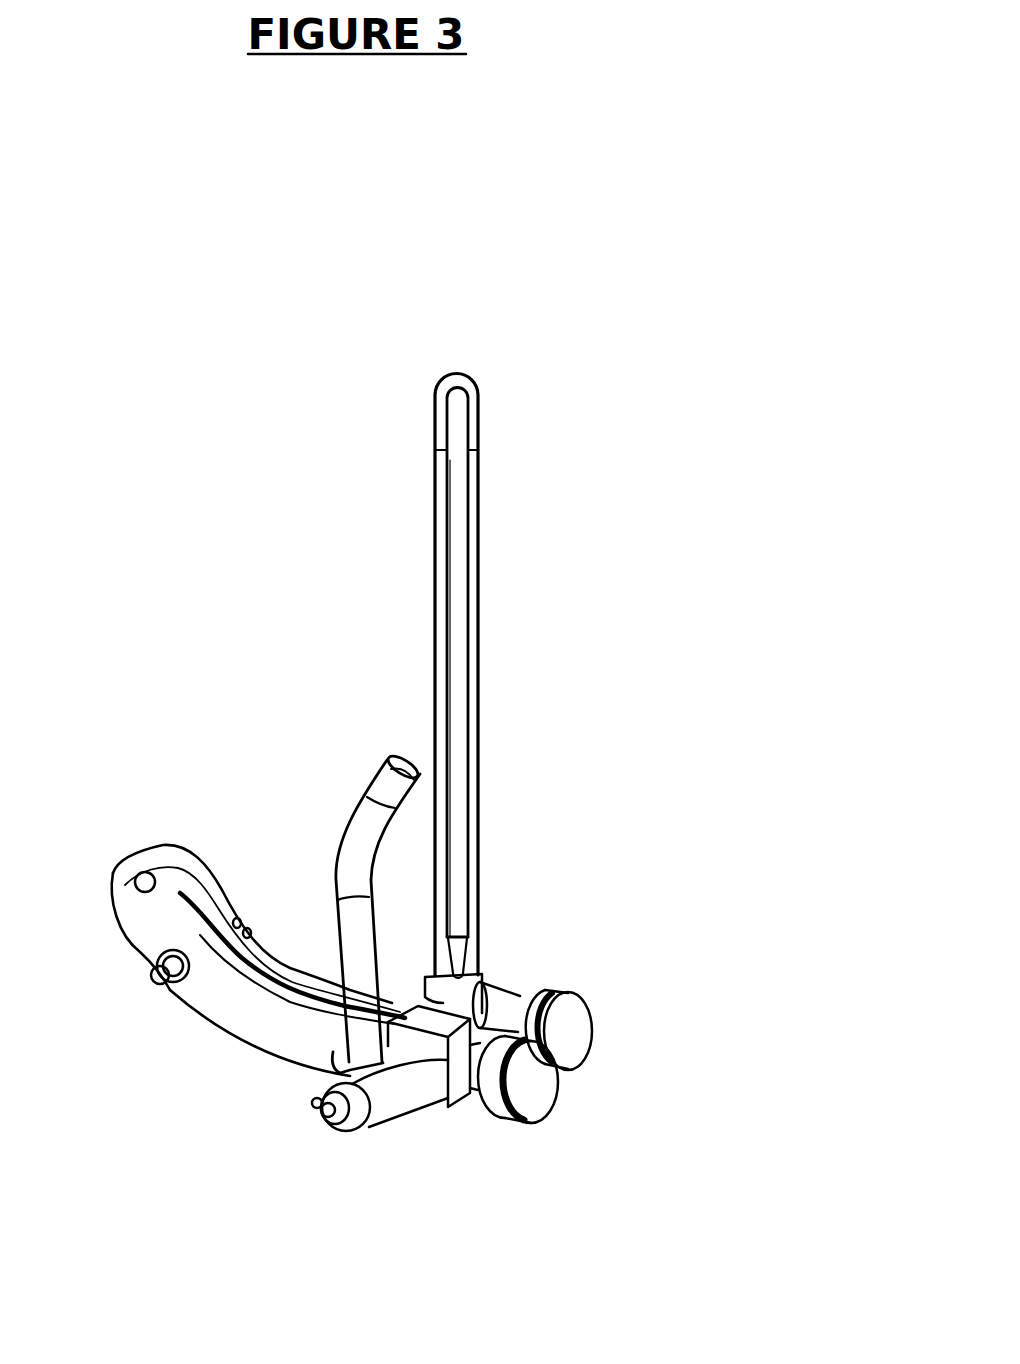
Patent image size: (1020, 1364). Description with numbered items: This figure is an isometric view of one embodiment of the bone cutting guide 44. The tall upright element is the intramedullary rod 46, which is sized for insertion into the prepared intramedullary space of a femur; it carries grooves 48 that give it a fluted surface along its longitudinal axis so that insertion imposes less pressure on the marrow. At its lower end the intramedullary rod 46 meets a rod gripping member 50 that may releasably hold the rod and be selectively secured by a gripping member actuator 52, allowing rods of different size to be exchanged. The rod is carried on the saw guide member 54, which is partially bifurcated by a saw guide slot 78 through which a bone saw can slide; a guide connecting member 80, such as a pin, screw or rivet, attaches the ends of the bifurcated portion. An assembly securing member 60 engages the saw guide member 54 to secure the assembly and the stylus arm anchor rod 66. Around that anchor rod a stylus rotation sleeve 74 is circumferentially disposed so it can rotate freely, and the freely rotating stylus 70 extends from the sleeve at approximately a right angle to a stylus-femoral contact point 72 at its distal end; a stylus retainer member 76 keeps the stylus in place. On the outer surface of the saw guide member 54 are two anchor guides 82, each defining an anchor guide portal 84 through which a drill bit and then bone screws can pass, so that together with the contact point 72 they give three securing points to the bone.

The bone cutting guide 44 is at (443, 332).
The intramedullary rod 46 is at (467, 374).
The grooves 48 is at (456, 802).
The rod gripping member 50 is at (492, 972).
The gripping member actuator 52 is at (572, 1032).
The saw guide member 54 is at (267, 1023).
The assembly securing member 60 is at (531, 1101).
The stylus arm anchor rod 66 is at (340, 1134).
The stylus 70 is at (355, 848).
The stylus-femoral contact point 72 is at (405, 757).
The stylus rotation sleeve 74 is at (407, 1103).
The stylus retainer member 76 is at (313, 1102).
The saw guide slot 78 is at (175, 990).
The guide connecting member 80 is at (150, 875).
The anchor guides 82 is at (239, 919).
The anchor guide portals 84 is at (249, 930).